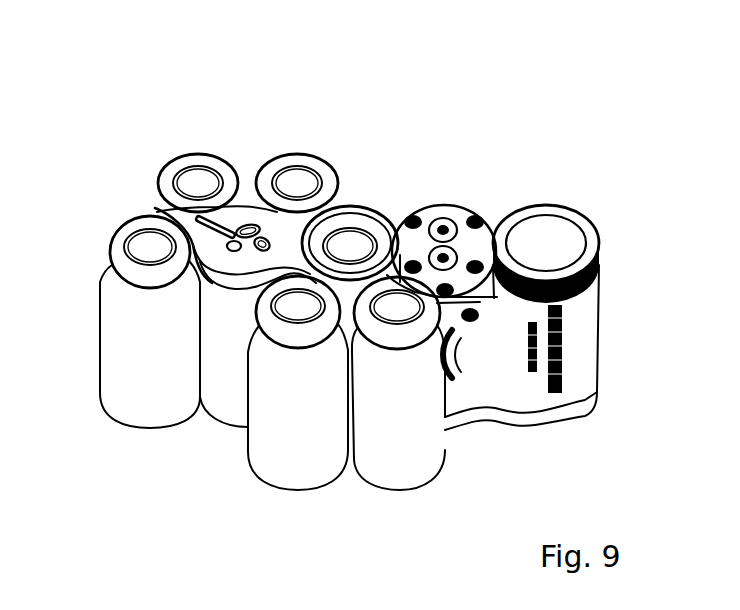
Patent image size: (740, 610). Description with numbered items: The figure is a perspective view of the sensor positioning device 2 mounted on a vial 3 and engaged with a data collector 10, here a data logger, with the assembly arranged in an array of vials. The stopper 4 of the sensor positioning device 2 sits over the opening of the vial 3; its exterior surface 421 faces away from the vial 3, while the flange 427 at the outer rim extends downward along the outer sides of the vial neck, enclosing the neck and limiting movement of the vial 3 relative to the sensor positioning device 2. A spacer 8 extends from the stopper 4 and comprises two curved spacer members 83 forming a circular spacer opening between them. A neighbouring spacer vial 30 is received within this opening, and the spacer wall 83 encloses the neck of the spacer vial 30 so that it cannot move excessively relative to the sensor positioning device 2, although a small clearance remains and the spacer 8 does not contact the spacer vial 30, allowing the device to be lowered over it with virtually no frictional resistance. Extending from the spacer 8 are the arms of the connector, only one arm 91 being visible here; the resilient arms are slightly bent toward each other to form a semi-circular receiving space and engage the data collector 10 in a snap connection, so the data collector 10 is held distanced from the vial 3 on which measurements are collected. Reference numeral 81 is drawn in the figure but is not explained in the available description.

The sensor positioning device 2 is at (263, 140).
The vial 3 is at (218, 420).
The stopper 4 is at (165, 205).
The spacer 8 is at (350, 165).
The data collector 10 is at (511, 165).
The spacer vial 30 is at (353, 223).
The cup inner ring 81 is at (380, 218).
The spacer member 83 is at (345, 300).
The arm 91 is at (498, 292).
The exterior surface 421 is at (241, 212).
The flange 427 is at (225, 277).